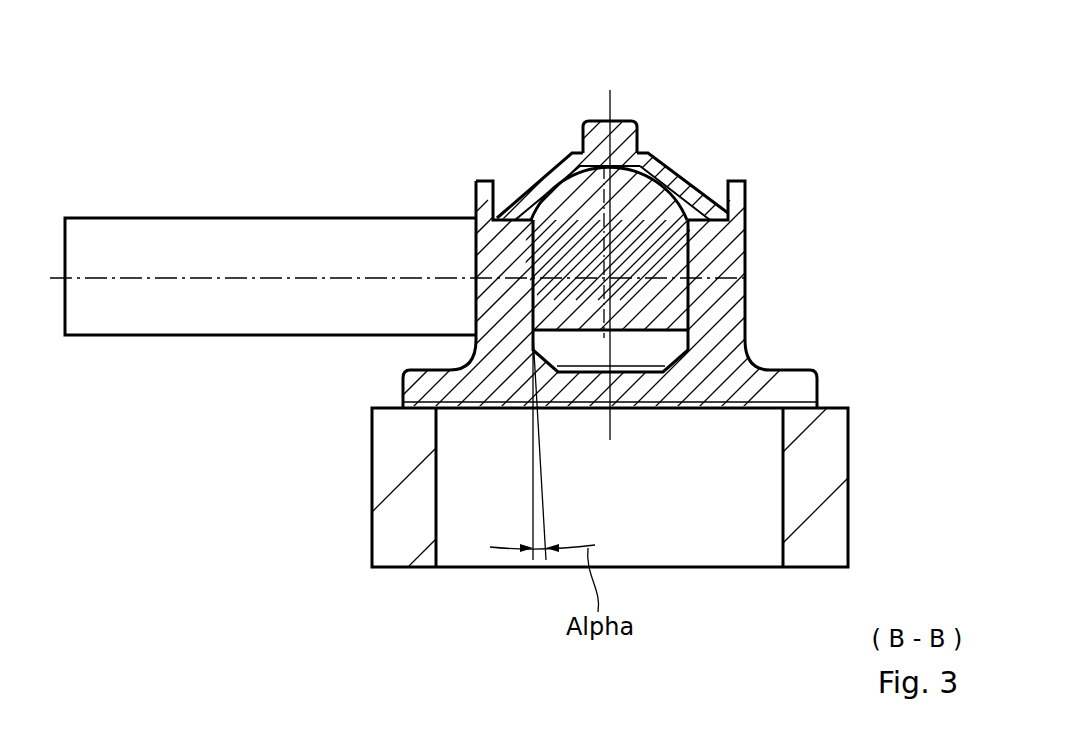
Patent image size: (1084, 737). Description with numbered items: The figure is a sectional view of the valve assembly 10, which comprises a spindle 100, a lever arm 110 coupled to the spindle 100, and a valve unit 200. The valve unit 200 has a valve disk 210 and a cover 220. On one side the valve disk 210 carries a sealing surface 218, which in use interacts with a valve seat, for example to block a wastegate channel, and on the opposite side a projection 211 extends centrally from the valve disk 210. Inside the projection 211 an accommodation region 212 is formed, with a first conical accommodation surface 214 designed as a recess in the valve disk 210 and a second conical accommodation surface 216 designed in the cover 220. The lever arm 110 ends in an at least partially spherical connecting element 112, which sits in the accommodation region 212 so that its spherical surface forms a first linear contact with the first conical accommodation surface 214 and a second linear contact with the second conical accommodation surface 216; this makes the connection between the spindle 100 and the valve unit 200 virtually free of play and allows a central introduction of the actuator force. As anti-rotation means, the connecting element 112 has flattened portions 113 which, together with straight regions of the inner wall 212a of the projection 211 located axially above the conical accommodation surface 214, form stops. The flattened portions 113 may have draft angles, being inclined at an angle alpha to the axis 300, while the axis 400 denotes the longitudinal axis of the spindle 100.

The valve assembly 10 is at (862, 152).
The spindle 100 is at (220, 210).
The lever arm 110 is at (578, 385).
The connecting element 112 is at (548, 200).
The flattened portion 113 is at (530, 340).
The valve unit 200 is at (826, 258).
The valve disk 210 is at (830, 386).
The projection 211 is at (735, 302).
The accommodation region 212 is at (576, 154).
The inner wall 212a is at (695, 240).
The first conical accommodation surface 214 is at (652, 362).
The second conical accommodation surface 216 is at (652, 188).
The sealing surface 218 is at (420, 413).
The cover 220 is at (590, 108).
The axis 300 is at (612, 102).
The axis of spindle 400 is at (293, 262).